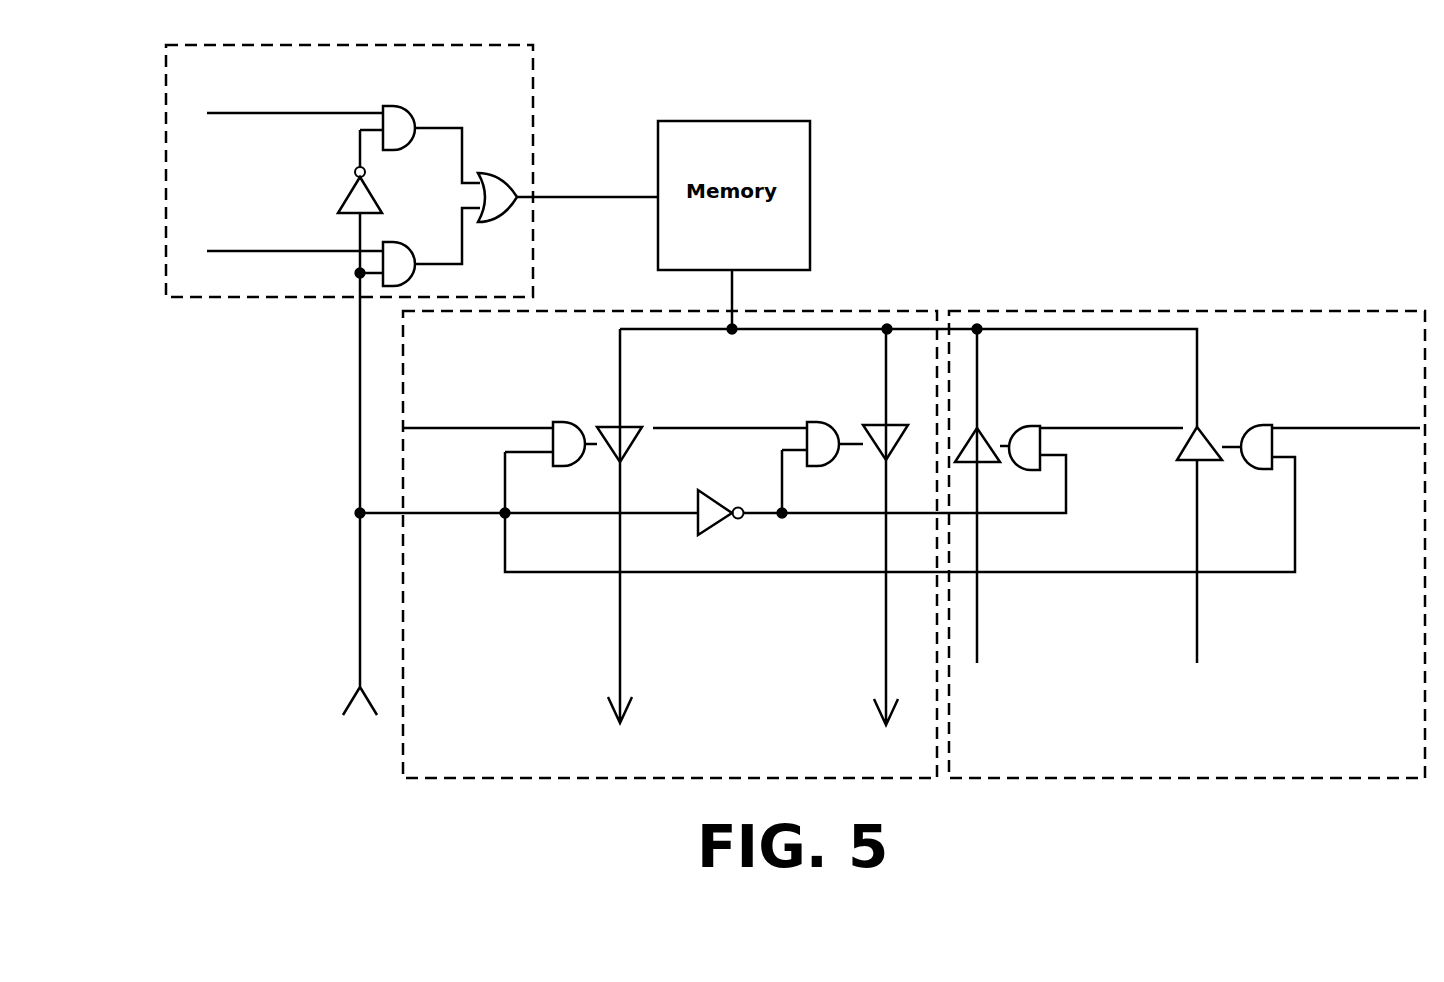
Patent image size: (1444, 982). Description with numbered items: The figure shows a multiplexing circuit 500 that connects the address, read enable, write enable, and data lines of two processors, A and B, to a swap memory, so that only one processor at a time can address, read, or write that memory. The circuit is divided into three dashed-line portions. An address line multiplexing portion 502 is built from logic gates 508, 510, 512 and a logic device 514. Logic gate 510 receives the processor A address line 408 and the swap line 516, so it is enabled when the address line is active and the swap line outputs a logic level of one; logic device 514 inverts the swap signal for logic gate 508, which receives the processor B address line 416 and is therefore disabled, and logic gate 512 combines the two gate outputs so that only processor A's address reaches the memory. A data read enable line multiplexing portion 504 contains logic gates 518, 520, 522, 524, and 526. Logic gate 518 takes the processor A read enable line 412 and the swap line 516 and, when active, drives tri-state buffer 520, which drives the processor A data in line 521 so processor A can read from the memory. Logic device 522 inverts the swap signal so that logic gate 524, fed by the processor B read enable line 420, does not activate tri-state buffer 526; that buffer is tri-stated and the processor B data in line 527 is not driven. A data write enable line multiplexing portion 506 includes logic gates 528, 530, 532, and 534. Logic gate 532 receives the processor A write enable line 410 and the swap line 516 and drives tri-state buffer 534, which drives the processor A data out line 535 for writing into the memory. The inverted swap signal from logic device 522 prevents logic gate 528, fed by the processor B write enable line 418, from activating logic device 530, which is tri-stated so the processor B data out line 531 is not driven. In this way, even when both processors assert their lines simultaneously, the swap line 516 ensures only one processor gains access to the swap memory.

The multiplexing circuit 500 is at (1190, 197).
The address line multiplexing portion 502 is at (246, 298).
The data read enable line multiplexing portion 504 is at (470, 779).
The data write enable line multiplexing portion 506 is at (1388, 310).
The logic gate 508 is at (406, 102).
The logic gate 510 is at (400, 242).
The logic gate 512 is at (488, 172).
The logic device 514 is at (366, 183).
The swap line 516 is at (358, 656).
The logic gate 518 is at (560, 468).
The tri-state buffer 520 is at (630, 452).
The processor A data in line 521 is at (618, 656).
The logic device 522 is at (716, 490).
The logic gate 524 is at (832, 467).
The tri-state buffer 526 is at (888, 425).
The processor B data in line 527 is at (885, 655).
The logic gate 528 is at (1013, 468).
The logic device 530 is at (983, 437).
The processor B data out line 531 is at (977, 624).
The logic gate 532 is at (1244, 468).
The tri-state buffer 534 is at (1205, 432).
The processor A data out line 535 is at (1197, 624).
The processor A address line 408 is at (225, 253).
The processor A write enable line 410 is at (1372, 430).
The processor A read enable line 412 is at (435, 430).
The processor B address line 416 is at (226, 115).
The processor B write enable line 418 is at (1117, 430).
The processor B read enable line 420 is at (803, 422).